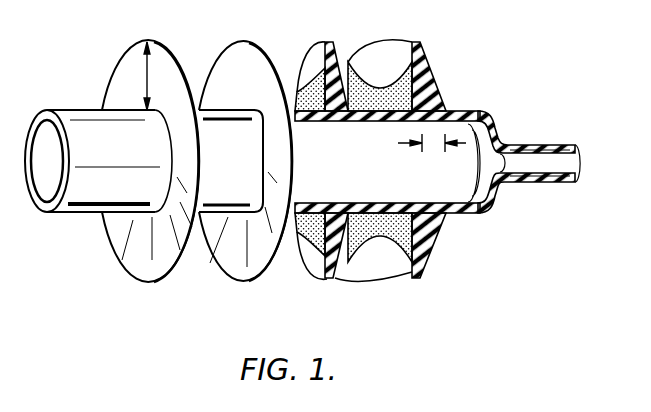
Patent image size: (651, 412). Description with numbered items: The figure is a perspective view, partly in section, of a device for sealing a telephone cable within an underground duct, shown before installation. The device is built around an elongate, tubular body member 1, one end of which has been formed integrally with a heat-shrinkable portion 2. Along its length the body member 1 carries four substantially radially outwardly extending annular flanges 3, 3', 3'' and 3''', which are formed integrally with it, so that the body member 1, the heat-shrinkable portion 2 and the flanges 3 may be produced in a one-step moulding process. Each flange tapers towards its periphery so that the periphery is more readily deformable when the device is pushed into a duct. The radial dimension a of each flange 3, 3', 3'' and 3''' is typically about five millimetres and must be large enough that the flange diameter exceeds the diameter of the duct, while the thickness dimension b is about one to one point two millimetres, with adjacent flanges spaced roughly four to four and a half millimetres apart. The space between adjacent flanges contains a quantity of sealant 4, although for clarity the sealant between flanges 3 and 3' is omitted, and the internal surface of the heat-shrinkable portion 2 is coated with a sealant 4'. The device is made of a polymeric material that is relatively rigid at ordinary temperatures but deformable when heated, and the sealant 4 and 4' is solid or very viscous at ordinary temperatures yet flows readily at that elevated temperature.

The tubular body member 1 is at (72, 214).
The heat-shrinkable portion 2 is at (514, 138).
The annular flange 3 is at (150, 178).
The annular flange 3' is at (245, 179).
The annular flange 3'' is at (329, 179).
The annular flange 3''' is at (423, 179).
The sealant 4 is at (353, 154).
The sealant 4' is at (560, 148).
The flange dimension a is at (135, 76).
The flange thickness dimension b is at (432, 144).